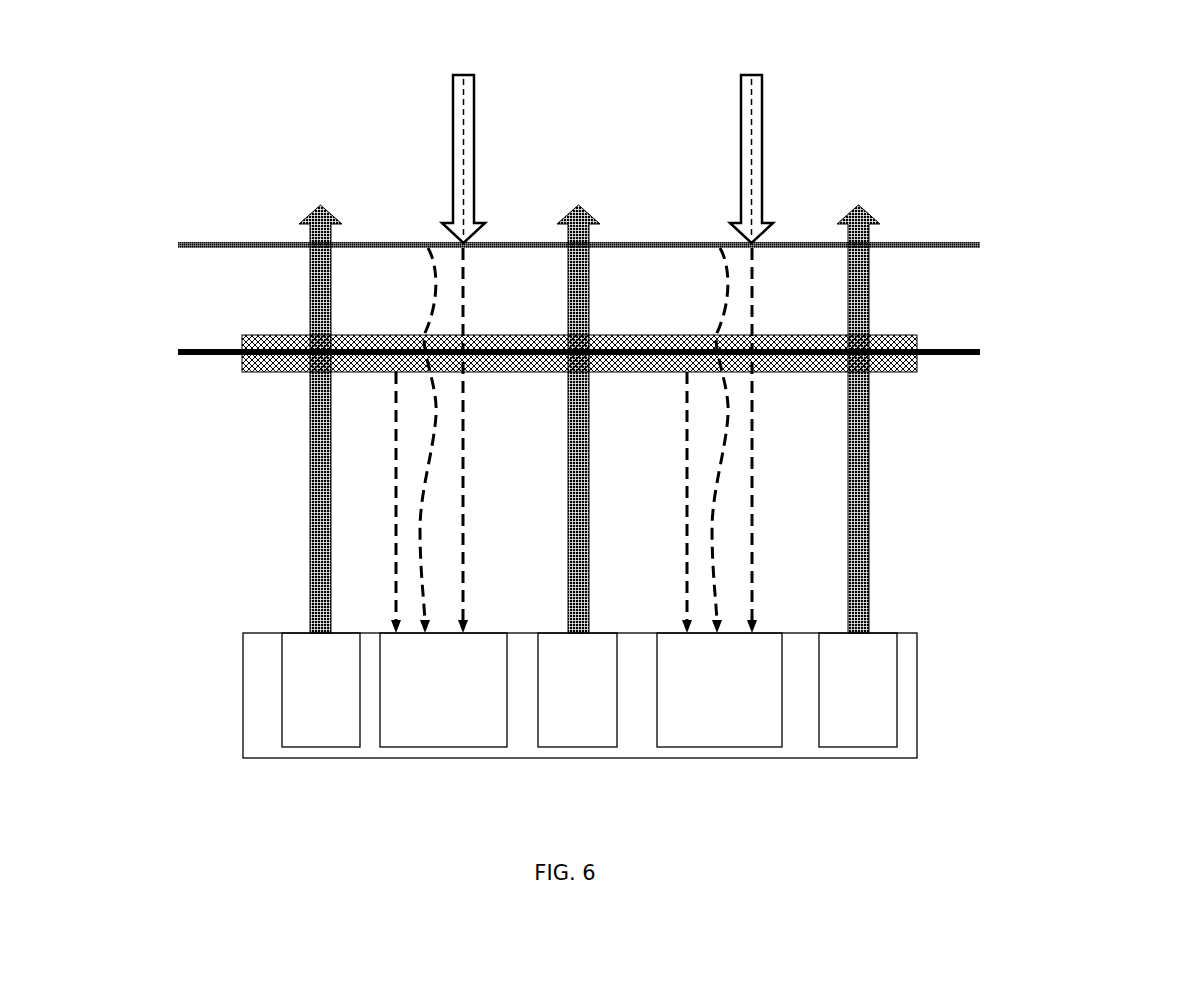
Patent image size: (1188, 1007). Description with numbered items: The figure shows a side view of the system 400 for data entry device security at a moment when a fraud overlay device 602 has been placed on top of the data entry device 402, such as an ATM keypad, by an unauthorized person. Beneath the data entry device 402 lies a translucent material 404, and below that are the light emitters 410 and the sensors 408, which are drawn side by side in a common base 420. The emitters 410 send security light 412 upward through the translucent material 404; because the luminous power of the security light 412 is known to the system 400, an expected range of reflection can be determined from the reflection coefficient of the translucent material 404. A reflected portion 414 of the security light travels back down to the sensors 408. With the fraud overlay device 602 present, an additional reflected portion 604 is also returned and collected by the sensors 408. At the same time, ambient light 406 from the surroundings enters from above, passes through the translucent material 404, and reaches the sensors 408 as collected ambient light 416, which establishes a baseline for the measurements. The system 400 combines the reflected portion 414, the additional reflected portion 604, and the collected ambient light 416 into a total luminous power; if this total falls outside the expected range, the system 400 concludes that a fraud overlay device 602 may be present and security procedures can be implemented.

The system 400 is at (1085, 390).
The data entry device 402 is at (180, 352).
The translucent material 404 is at (260, 336).
The ambient light 406 is at (460, 75).
The sensors 408 is at (424, 704).
The light emitters 410 is at (302, 704).
The security light 412 is at (321, 205).
The reflected portion 414 is at (393, 520).
The collected ambient light 416 is at (463, 502).
The substrate 420 is at (243, 696).
The fraud overlay device 602 is at (178, 245).
The additional reflected portion 604 is at (427, 315).